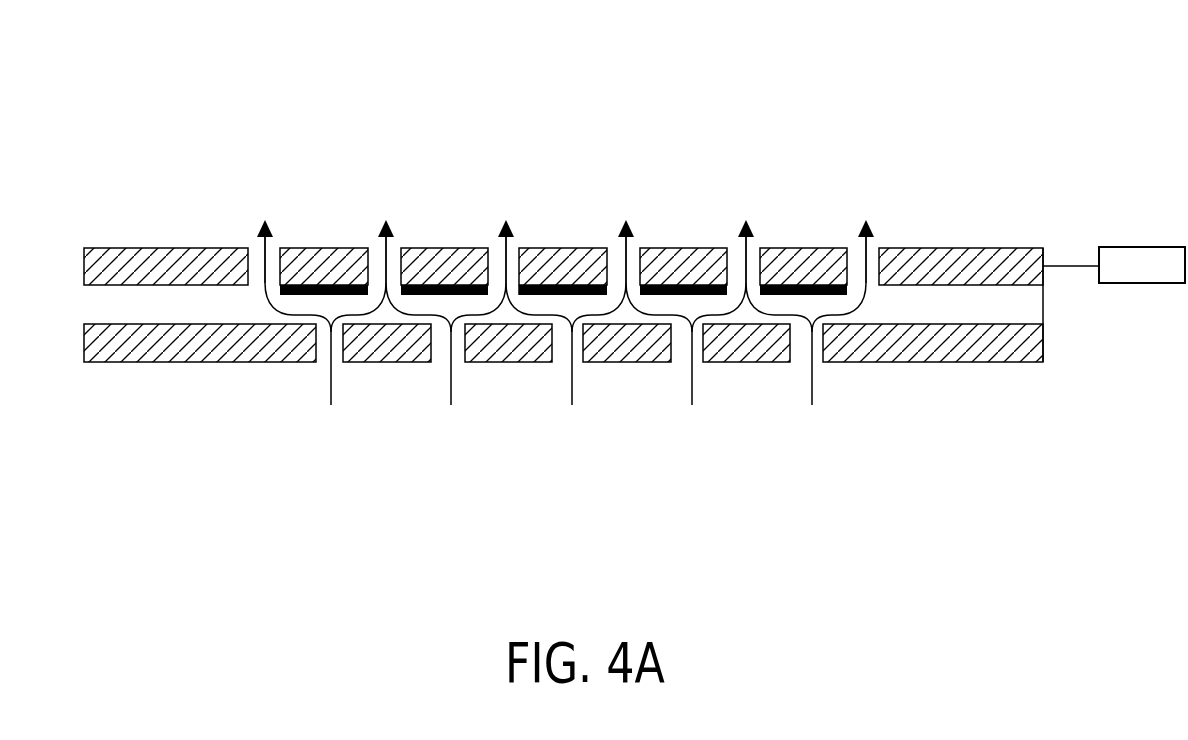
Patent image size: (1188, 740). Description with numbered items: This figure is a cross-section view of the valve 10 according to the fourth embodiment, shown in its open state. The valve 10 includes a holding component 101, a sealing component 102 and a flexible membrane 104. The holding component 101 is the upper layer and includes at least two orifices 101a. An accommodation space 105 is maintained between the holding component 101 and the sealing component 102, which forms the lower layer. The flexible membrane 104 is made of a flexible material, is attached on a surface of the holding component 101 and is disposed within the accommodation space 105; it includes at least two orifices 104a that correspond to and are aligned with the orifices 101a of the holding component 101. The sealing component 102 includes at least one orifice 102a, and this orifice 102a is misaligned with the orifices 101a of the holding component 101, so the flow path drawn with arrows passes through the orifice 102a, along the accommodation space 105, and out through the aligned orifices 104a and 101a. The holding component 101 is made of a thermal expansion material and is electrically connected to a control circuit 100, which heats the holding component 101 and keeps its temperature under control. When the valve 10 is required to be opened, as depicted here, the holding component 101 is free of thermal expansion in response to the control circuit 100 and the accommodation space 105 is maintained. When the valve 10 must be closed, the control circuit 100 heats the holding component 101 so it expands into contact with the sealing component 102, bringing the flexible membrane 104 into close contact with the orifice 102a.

The valve 10 is at (1143, 70).
The control circuit 100 is at (1141, 247).
The holding component 101 is at (962, 270).
The orifice of the holding component 101a is at (783, 232).
The sealing component 102 is at (1028, 353).
The orifice of the sealing component 102a is at (602, 380).
The flexible membrane 104 is at (820, 282).
The orifice of the flexible membrane 104a is at (533, 278).
The accommodation space 105 is at (962, 315).